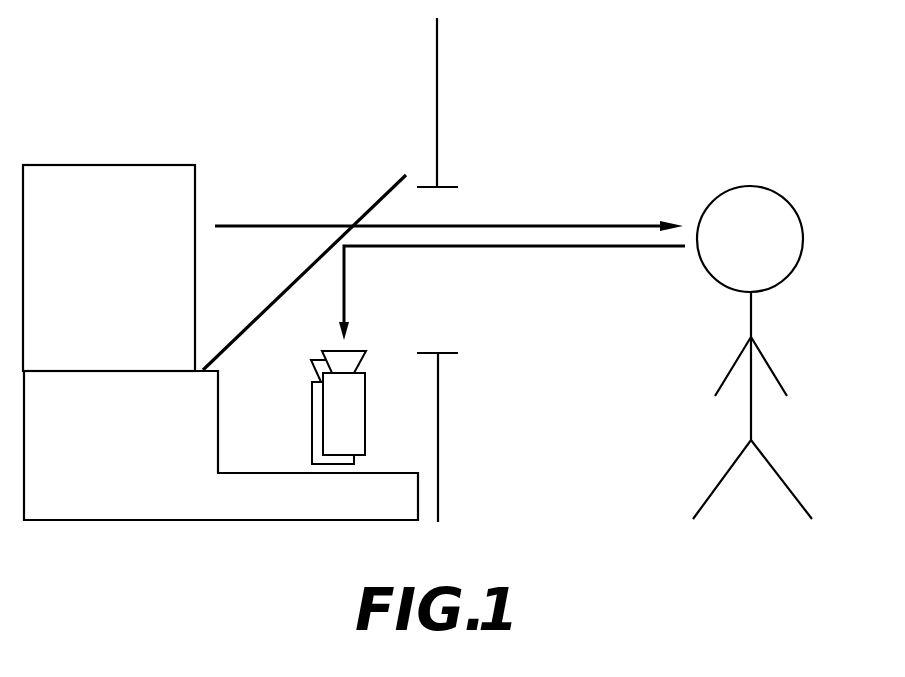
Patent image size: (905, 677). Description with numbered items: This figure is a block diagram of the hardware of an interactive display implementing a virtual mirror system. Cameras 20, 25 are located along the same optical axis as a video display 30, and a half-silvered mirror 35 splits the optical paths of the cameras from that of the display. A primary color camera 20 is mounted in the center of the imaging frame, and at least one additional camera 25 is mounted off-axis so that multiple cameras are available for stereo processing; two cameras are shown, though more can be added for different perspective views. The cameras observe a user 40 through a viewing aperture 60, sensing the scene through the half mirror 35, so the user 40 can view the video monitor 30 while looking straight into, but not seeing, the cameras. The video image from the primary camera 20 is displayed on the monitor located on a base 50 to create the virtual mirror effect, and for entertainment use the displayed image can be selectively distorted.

The primary color camera 20 is at (350, 415).
The additional camera 25 is at (312, 448).
The video display 30 is at (109, 268).
The half-silvered mirror 35 is at (374, 199).
The user 40 is at (775, 192).
The base 50 is at (121, 521).
The viewing aperture 60 is at (438, 207).